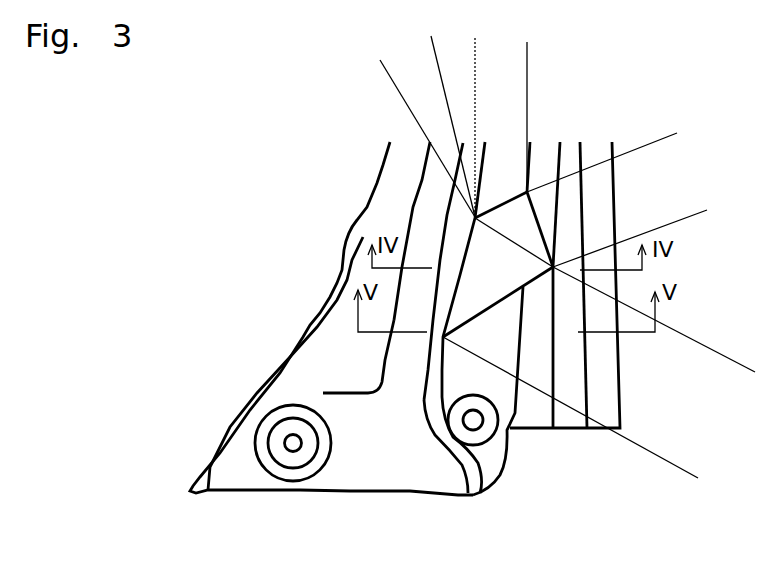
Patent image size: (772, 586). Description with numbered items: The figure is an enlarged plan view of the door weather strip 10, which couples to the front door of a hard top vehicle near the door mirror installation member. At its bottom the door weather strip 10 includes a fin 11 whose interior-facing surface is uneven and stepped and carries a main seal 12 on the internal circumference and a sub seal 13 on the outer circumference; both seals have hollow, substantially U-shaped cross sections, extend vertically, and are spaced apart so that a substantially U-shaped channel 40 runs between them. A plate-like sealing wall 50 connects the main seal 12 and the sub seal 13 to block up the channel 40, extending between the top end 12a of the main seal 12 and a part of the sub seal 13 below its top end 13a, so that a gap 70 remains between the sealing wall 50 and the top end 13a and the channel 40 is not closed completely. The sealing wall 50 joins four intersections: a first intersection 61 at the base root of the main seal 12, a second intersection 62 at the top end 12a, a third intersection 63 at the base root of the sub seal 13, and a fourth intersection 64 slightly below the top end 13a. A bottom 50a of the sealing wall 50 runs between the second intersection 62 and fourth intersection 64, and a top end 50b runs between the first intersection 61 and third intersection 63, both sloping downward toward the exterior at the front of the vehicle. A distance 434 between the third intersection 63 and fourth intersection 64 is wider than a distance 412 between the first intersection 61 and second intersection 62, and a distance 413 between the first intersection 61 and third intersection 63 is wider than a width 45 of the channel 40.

The door weather strip 10 is at (394, 124).
The fin 11 is at (303, 380).
The main seal 12 is at (535, 410).
The top end of the main seal 12a is at (555, 377).
The sub seal 13 is at (410, 306).
The top end of the sub seal 13a is at (412, 338).
The channel 40 is at (505, 387).
The width of the channel 45 is at (552, 63).
The sealing wall 50 is at (498, 255).
The bottom of the sealing wall 50a is at (492, 330).
The top end of the sealing wall 50b is at (500, 205).
The first intersection 61 is at (527, 192).
The second intersection 62 is at (557, 268).
The third intersection 63 is at (460, 218).
The fourth intersection 64 is at (403, 320).
The gap 70 is at (382, 405).
The distance between the first intersection and the second intersection 412 is at (652, 110).
The distance between the first intersection and the third intersection 413 is at (467, 40).
The distance between the third intersection and the fourth intersection 434 is at (753, 327).